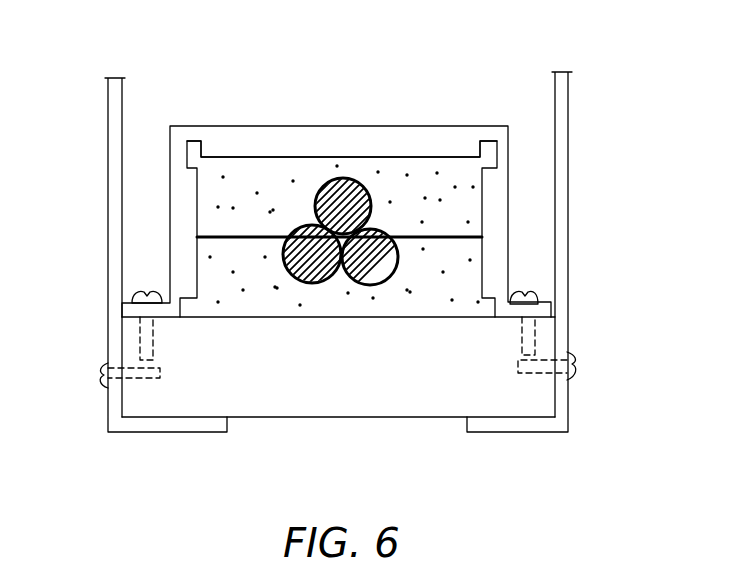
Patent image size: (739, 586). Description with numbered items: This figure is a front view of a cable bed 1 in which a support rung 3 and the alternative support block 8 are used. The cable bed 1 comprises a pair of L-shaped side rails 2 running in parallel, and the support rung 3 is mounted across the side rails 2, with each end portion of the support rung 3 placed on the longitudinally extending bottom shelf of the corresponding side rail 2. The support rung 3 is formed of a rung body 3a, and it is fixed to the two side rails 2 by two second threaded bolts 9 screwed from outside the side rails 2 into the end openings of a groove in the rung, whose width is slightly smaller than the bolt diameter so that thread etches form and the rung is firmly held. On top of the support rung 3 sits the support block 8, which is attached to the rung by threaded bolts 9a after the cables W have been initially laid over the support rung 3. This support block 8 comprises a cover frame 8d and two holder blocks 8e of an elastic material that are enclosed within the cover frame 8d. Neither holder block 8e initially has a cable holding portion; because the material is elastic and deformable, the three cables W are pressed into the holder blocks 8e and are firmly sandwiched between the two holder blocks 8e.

The cable bed 1 is at (339, 256).
The side rail 2 is at (117, 142).
The support rung 3 is at (452, 417).
The rung body 3a is at (396, 378).
The support block 8 is at (457, 127).
The cover frame 8d is at (228, 143).
The holder block 8e is at (452, 200).
The second threaded bolt 9 is at (104, 372).
The threaded bolt 9a is at (140, 293).
The cable W is at (355, 178).